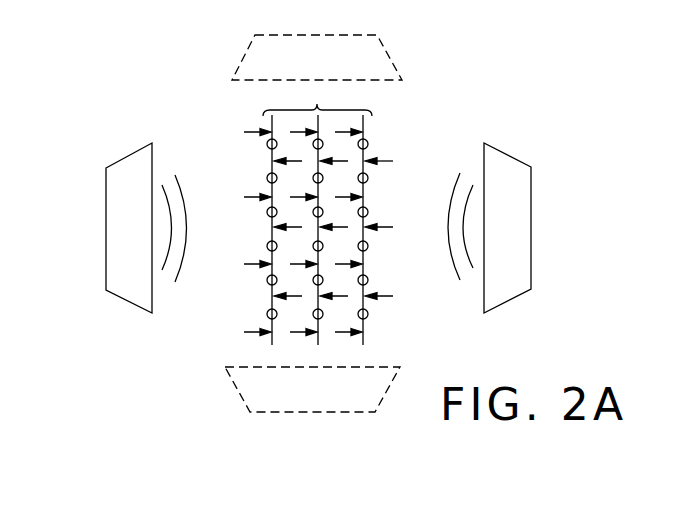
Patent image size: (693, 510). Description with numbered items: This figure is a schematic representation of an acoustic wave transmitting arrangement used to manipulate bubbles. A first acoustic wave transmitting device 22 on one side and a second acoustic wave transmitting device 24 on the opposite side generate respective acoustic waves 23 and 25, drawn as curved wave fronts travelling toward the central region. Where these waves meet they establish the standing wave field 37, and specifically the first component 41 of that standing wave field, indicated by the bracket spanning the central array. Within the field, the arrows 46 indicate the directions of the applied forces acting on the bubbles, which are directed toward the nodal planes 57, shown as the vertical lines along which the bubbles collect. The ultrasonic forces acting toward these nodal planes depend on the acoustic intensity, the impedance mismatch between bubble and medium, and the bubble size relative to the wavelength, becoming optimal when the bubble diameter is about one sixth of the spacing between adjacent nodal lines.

The first acoustic wave transmitting device 22 is at (105, 220).
The acoustic waves 23 is at (185, 190).
The second acoustic wave transmitting device 24 is at (531, 193).
The acoustic waves 25 is at (443, 245).
The standing wave field 37 is at (415, 113).
The first component of the standing wave field 41 is at (292, 92).
The arrows 46 is at (385, 159).
The nodal planes 57 is at (363, 340).